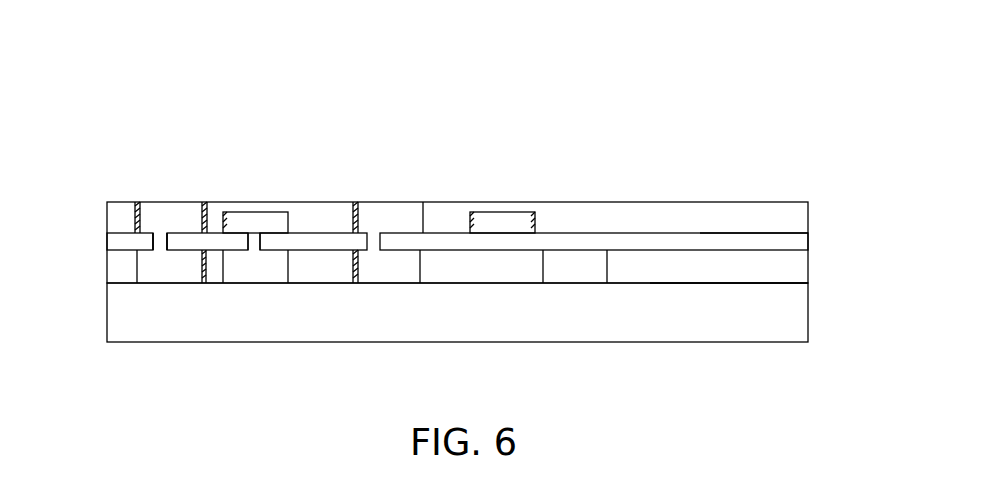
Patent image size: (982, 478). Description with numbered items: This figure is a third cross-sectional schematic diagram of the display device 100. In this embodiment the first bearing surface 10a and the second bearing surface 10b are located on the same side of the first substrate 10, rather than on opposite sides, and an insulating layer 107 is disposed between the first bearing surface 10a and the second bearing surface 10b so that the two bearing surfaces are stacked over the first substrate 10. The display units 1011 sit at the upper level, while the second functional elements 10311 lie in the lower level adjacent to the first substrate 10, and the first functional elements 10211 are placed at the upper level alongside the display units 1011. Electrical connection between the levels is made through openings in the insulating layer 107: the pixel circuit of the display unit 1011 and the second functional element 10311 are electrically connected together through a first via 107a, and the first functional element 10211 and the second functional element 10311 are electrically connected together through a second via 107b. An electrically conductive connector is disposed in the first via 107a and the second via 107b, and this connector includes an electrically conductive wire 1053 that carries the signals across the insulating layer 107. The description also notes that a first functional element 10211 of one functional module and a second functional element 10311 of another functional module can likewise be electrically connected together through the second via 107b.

The display device 100 is at (461, 205).
The first substrate 10 is at (779, 313).
The first bearing surface 10a is at (775, 231).
The second bearing surface 10b is at (718, 281).
The insulating layer 107 is at (779, 245).
The first via 107a is at (151, 240).
The second via 107b is at (270, 238).
The display unit 1011 is at (150, 218).
The first functional element 10211 is at (254, 222).
The second functional element 10311 is at (608, 355).
The electrically conductive wire 1053 is at (157, 242).